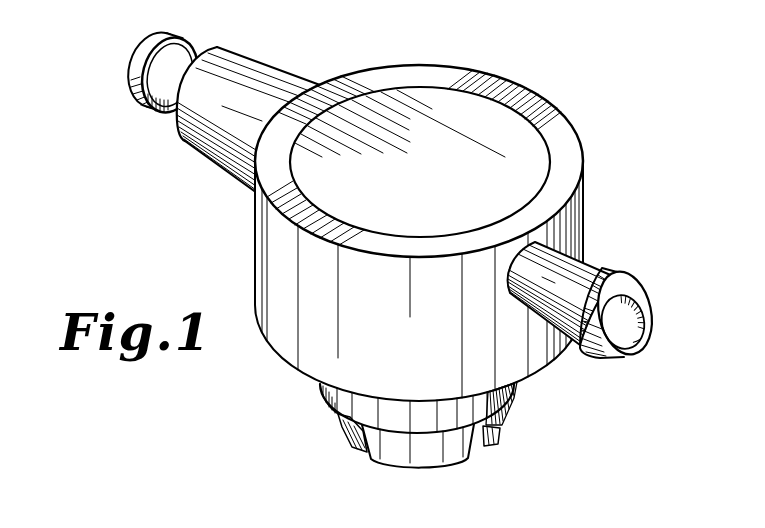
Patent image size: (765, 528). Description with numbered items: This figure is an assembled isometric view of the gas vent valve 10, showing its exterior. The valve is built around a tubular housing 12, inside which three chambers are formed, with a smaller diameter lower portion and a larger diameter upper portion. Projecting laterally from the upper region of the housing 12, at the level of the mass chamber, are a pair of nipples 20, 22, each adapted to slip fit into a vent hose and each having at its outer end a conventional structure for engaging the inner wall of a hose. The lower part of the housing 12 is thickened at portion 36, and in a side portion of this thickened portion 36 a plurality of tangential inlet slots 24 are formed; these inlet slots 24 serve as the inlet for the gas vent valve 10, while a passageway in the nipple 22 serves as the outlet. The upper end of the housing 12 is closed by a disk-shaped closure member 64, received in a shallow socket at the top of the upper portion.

The gas vent valve 10 is at (397, 271).
The tubular housing 12 is at (250, 267).
The nipple 20 is at (178, 115).
The nipple 22 is at (604, 271).
The tangential inlet slots 24 is at (367, 452).
The thickened portion 36 is at (422, 453).
The disk-shaped closure member 64 is at (527, 156).